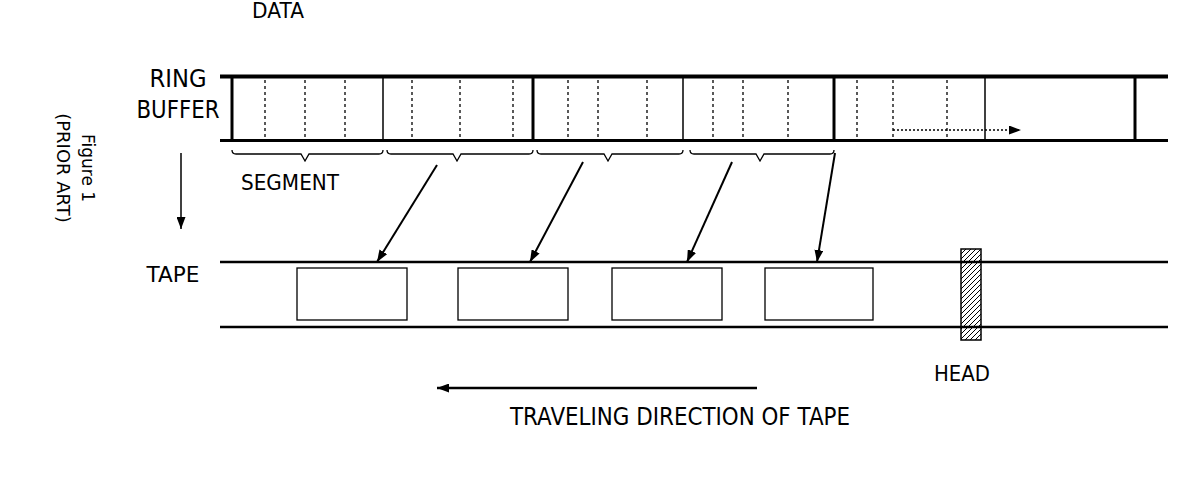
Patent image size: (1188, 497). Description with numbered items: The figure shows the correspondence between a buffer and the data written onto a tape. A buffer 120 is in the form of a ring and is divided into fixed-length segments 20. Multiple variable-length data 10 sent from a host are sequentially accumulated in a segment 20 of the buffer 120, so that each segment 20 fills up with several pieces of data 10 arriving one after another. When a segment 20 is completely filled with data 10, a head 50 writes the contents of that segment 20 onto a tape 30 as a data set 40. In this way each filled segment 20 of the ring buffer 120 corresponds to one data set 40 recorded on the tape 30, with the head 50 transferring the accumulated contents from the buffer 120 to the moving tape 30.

The variable-length data 10 is at (946, 67).
The segment 20 is at (533, 206).
The buffer 120 is at (667, 108).
The tape 30 is at (669, 294).
The data set 40 is at (585, 294).
The head 50 is at (969, 342).